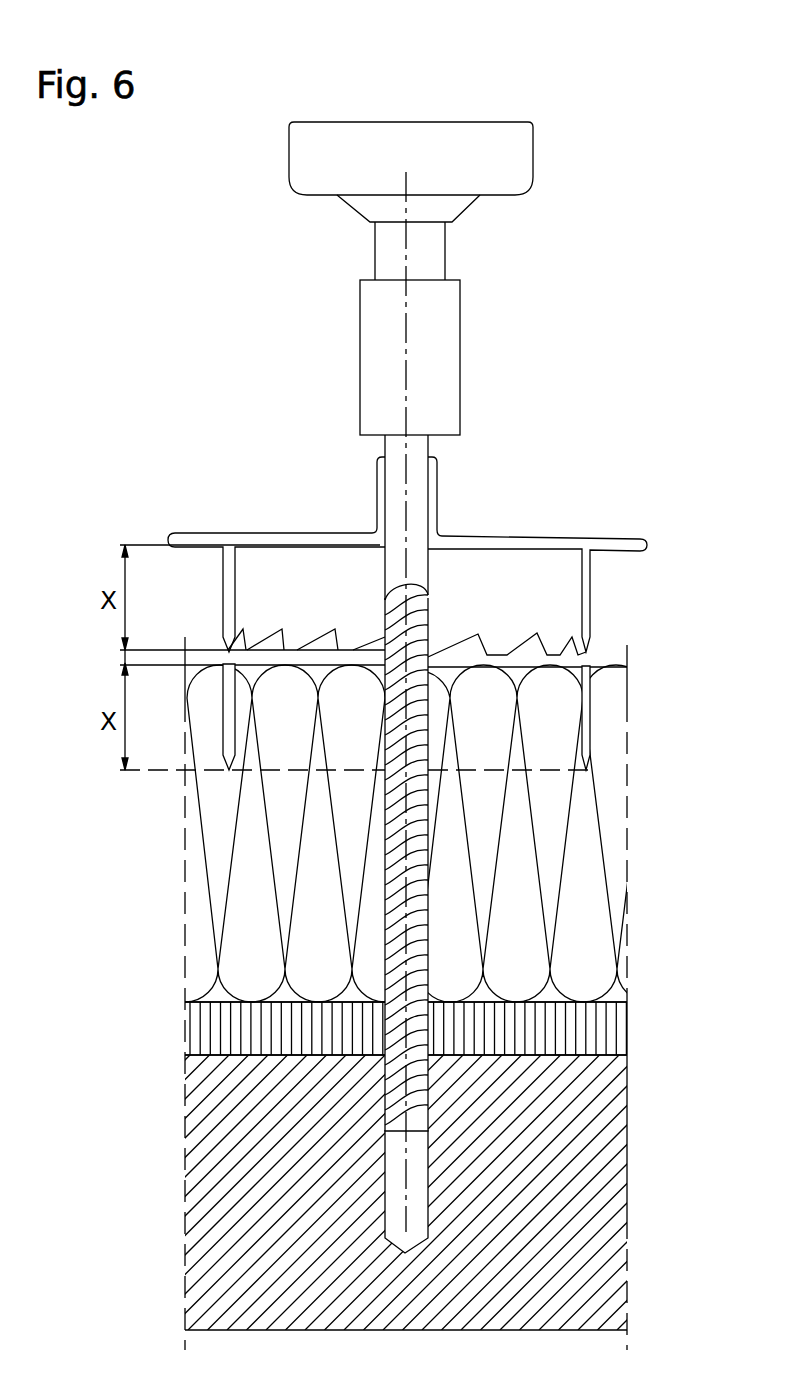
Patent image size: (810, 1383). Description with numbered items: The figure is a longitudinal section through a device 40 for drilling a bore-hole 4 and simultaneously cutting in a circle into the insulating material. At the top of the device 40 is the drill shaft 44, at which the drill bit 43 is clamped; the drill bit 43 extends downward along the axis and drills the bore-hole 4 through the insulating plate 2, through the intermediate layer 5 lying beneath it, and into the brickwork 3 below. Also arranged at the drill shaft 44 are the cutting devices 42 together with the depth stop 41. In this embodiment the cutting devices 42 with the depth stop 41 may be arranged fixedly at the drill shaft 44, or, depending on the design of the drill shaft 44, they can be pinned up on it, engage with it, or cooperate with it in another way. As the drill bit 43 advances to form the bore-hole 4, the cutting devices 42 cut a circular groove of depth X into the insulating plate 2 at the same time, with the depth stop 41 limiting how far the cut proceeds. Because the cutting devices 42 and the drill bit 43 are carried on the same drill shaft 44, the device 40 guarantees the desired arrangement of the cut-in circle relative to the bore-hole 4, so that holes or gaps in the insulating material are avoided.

The insulating plate 2 is at (552, 855).
The brickwork 3 is at (562, 1172).
The bore-hole 4 is at (413, 1215).
The intermediate layer 5 is at (593, 1033).
The device 40 is at (502, 125).
The depth stop 41 is at (593, 543).
The cutting devices 42 is at (553, 650).
The drill bit 43 is at (390, 957).
The drill shaft 44 is at (393, 342).